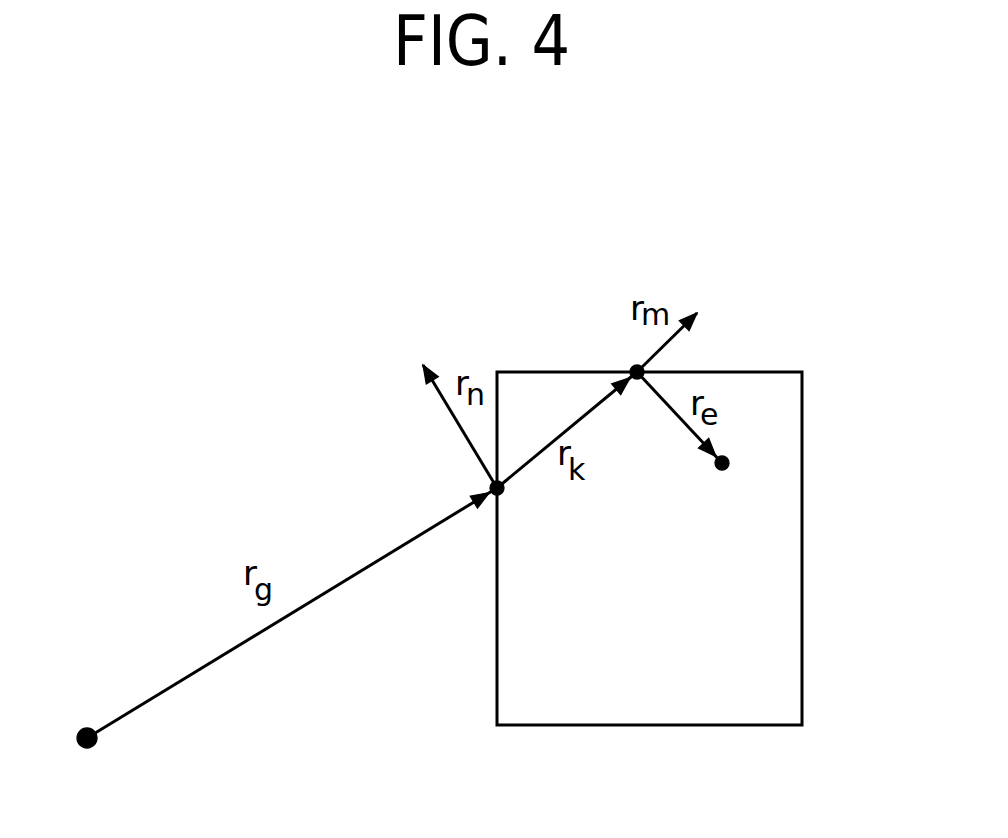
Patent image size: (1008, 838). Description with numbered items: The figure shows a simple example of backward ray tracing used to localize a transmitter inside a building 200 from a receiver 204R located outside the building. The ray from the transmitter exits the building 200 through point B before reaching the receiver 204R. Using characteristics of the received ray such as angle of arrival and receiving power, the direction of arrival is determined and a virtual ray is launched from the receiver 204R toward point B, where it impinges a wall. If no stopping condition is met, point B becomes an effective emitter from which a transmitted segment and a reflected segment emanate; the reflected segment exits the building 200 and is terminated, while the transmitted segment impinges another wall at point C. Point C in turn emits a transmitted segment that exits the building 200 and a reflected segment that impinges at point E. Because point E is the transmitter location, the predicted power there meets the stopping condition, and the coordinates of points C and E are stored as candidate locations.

The building 200 is at (803, 678).
The receiver 204R is at (95, 760).
The point B is at (508, 512).
The point C is at (620, 352).
The point E is at (733, 484).